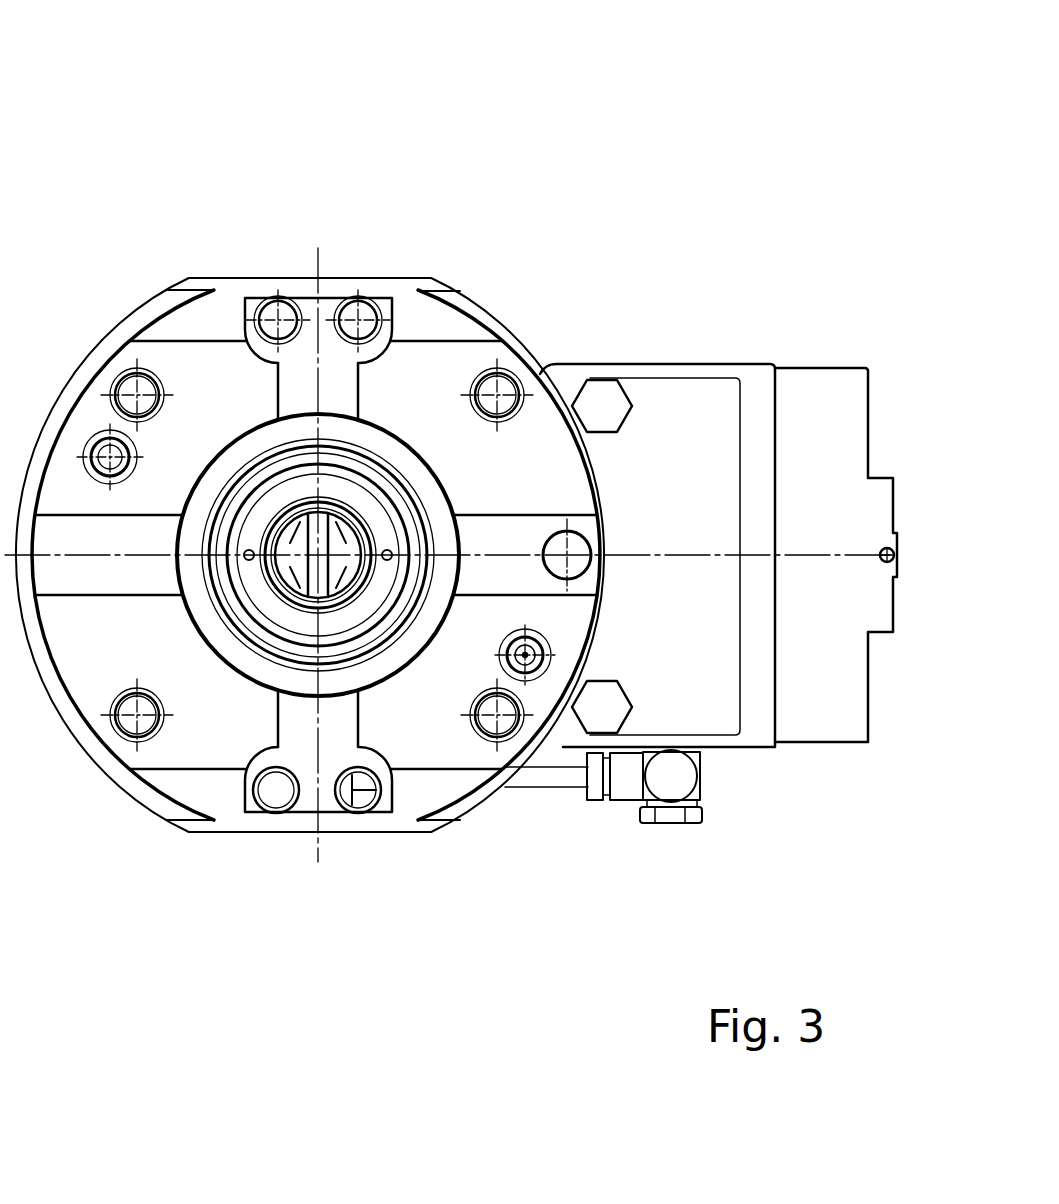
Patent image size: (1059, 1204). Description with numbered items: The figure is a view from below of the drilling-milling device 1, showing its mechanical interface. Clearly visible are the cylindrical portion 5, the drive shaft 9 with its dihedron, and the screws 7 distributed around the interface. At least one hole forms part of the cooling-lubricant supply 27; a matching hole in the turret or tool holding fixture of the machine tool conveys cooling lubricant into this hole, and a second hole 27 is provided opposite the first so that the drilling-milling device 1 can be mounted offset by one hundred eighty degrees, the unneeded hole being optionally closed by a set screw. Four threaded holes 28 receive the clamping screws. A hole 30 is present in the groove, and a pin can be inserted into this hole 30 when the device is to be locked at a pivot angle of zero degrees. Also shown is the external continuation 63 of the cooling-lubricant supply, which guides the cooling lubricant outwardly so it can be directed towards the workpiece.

The drilling-milling device 1 is at (668, 208).
The cylindrical portion 5 is at (253, 690).
The screws 7 is at (143, 386).
The drive shaft 9 is at (287, 590).
The cooling-lubricant supply 27 is at (103, 432).
The threaded holes 28 is at (287, 298).
The hole 30 is at (590, 543).
The external continuation of the cooling-lubricant supply 63 is at (558, 790).